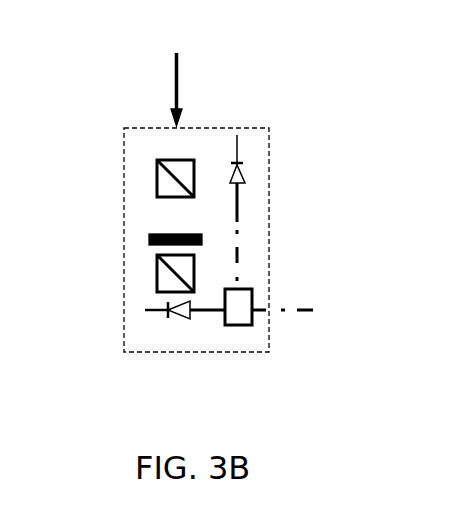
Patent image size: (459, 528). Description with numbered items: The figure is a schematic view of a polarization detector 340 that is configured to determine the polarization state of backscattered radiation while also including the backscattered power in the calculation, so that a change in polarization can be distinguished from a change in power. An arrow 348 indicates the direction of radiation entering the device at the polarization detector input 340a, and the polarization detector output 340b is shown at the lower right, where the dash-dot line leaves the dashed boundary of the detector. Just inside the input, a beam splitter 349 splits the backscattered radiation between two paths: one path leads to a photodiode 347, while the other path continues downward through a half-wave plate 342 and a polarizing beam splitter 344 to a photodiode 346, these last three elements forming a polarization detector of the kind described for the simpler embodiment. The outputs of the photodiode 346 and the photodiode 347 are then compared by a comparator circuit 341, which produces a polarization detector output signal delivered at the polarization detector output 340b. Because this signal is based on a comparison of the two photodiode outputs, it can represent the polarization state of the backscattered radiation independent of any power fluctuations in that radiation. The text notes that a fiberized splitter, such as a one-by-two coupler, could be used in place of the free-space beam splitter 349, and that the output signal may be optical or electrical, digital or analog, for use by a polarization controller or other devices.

The polarization detector 340 is at (124, 134).
The polarization detector input 340a is at (189, 112).
The polarization detector output 340b is at (280, 305).
The comparator circuit 341 is at (240, 313).
The half-wave plate 342 is at (149, 238).
The polarizing beam splitter 344 is at (162, 281).
The photodiode 346 is at (184, 318).
The photodiode 347 is at (245, 182).
The arrow 348 is at (177, 77).
The beam splitter 349 is at (157, 183).